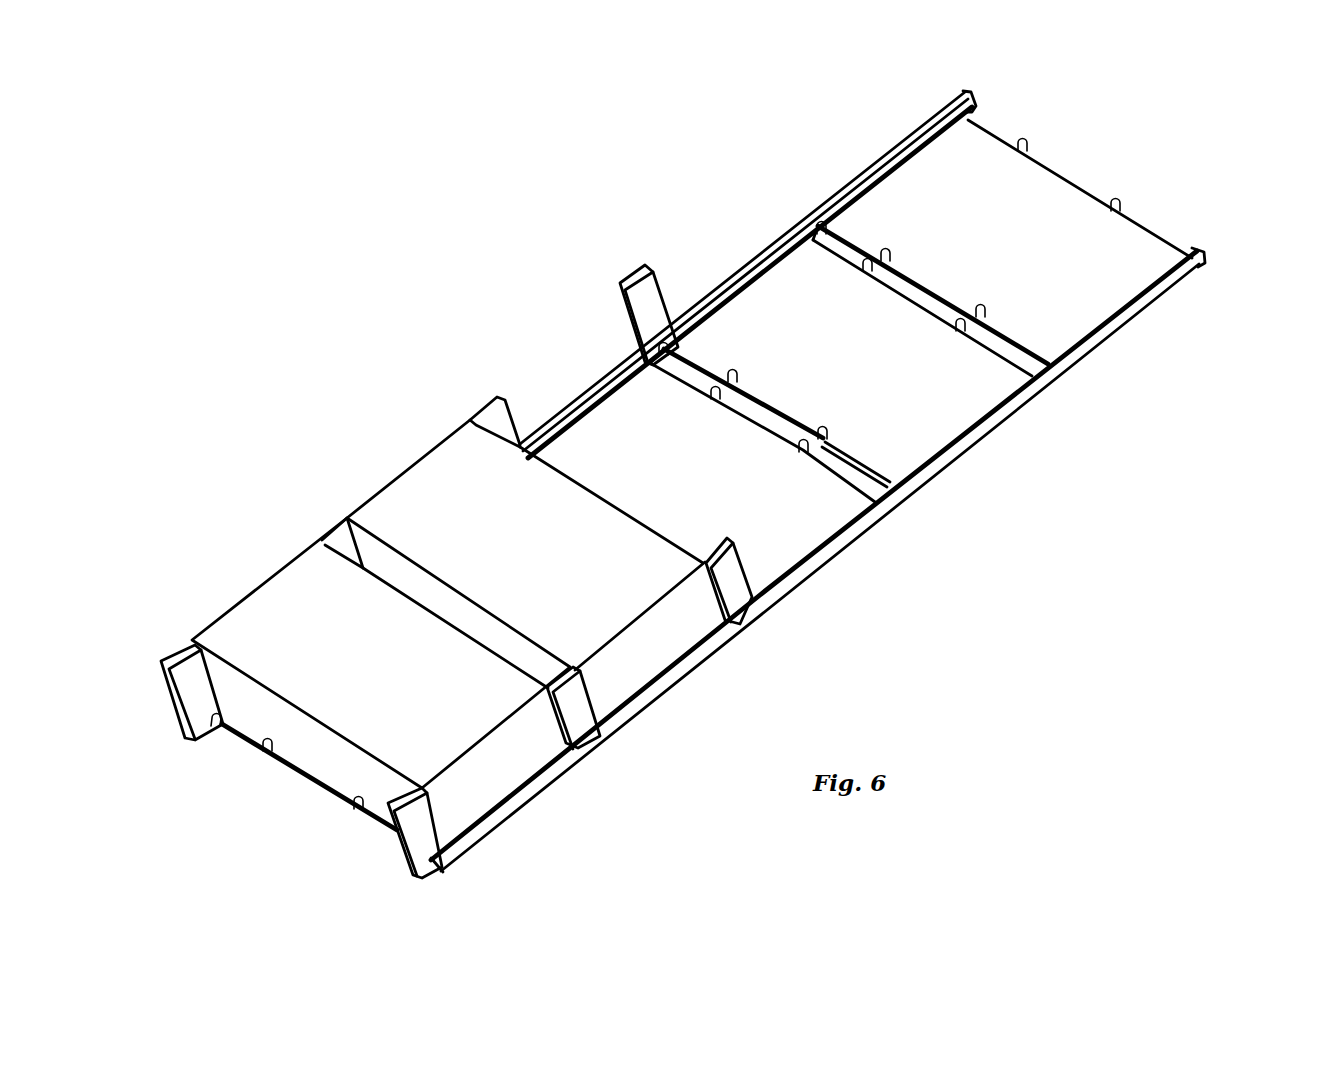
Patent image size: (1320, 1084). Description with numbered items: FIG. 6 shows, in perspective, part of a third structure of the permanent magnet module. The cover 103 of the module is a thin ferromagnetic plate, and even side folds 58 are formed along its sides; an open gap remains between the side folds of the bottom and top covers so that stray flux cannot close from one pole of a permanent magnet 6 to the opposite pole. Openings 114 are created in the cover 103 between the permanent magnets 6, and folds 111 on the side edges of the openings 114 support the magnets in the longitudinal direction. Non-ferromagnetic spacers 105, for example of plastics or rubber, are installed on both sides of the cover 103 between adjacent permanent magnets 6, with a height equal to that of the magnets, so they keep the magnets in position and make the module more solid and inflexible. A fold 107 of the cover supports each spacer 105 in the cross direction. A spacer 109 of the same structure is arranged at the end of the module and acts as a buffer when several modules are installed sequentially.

The permanent magnet 6 is at (453, 713).
The side fold 58 is at (1046, 366).
The cover 103 is at (1133, 182).
The spacer 105 is at (347, 516).
The fold 107 is at (215, 728).
The end spacer 109 is at (183, 673).
The fold 111 is at (268, 748).
The opening 114 is at (690, 372).